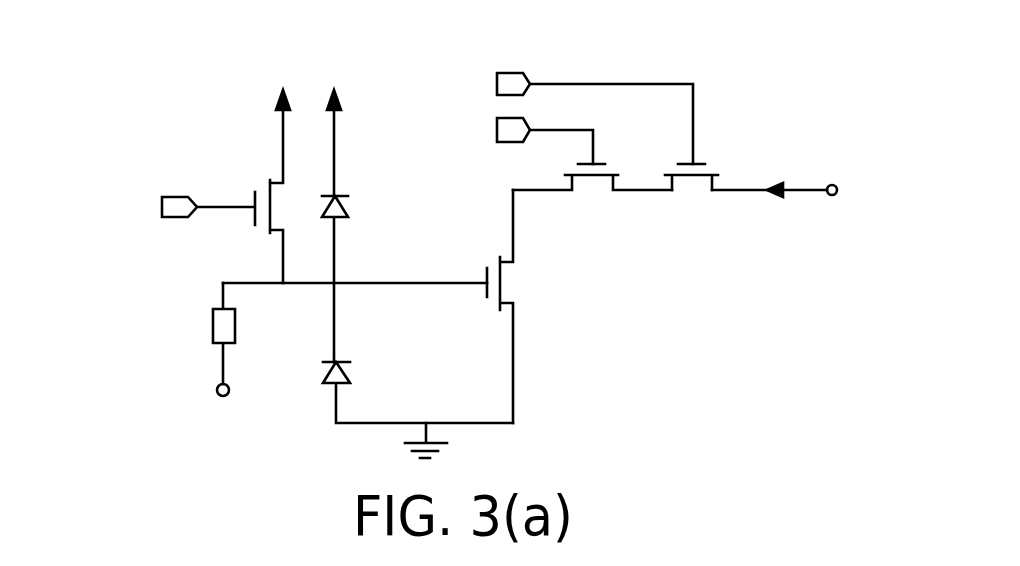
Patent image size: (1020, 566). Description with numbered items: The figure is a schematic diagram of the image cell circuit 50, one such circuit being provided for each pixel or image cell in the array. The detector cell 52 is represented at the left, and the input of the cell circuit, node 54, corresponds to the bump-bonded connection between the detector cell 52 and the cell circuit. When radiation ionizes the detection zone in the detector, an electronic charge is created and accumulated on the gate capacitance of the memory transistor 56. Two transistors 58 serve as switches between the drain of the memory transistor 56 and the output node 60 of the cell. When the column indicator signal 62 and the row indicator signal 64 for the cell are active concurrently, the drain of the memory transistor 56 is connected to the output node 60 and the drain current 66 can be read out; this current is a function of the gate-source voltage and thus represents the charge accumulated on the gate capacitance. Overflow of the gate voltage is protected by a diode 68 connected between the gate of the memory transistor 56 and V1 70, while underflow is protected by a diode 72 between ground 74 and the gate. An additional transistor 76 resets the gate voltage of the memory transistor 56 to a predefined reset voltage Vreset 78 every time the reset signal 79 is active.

The image cell circuit 50 is at (171, 437).
The detector cell 52 is at (237, 325).
The node 54 is at (222, 281).
The memory transistor 56 is at (513, 286).
The transistors 58 is at (602, 192).
The output node 60 is at (832, 184).
The column indicator signal 62 is at (508, 145).
The row indicator signal 64 is at (508, 70).
The drain current 66 is at (795, 245).
The diode 68 is at (350, 215).
The V1 70 is at (348, 50).
The diode 72 is at (352, 372).
The ground 74 is at (440, 452).
The additional transistor 76 is at (262, 230).
The reset voltage Vreset 78 is at (257, 72).
The reset signal 79 is at (178, 195).